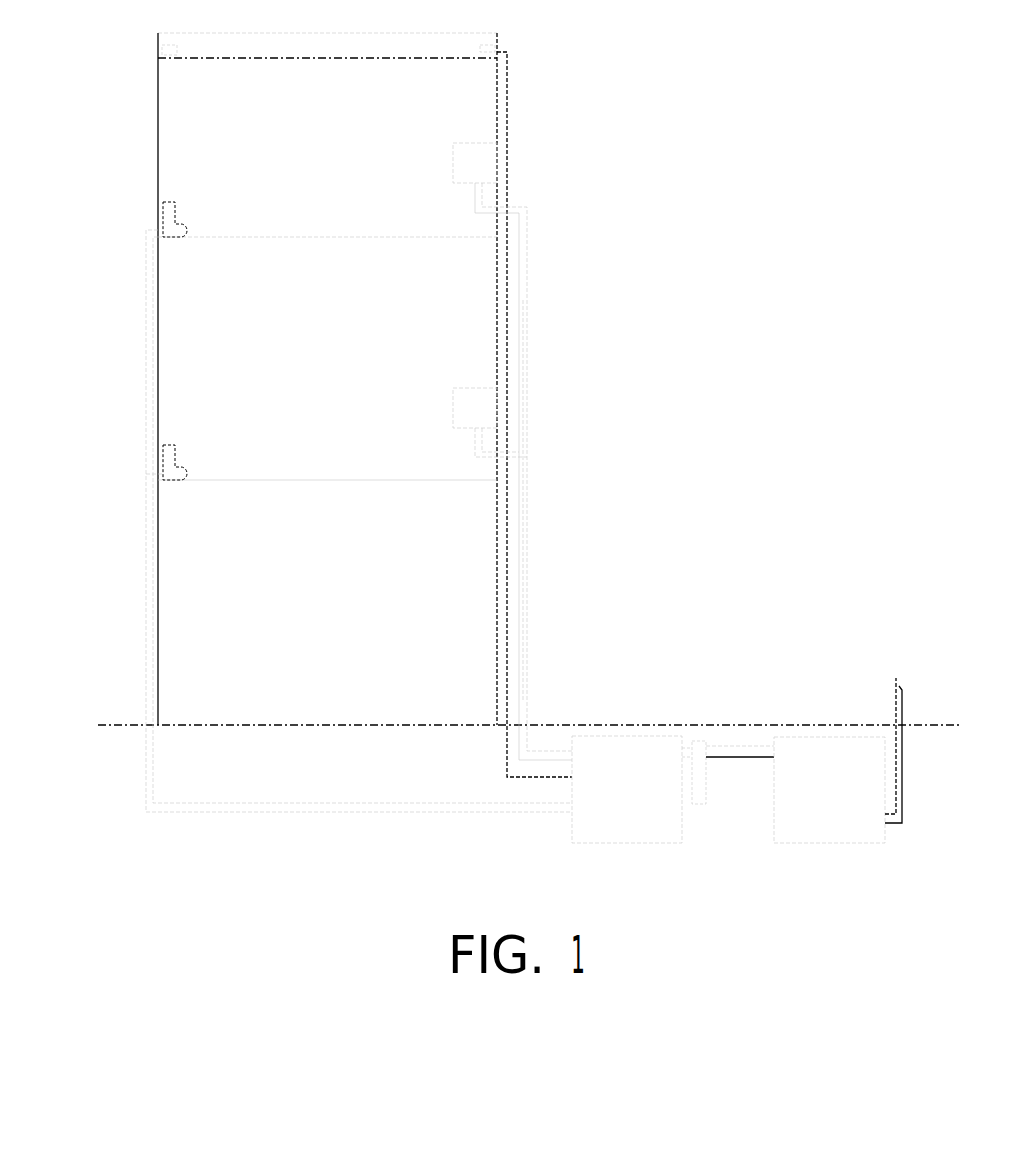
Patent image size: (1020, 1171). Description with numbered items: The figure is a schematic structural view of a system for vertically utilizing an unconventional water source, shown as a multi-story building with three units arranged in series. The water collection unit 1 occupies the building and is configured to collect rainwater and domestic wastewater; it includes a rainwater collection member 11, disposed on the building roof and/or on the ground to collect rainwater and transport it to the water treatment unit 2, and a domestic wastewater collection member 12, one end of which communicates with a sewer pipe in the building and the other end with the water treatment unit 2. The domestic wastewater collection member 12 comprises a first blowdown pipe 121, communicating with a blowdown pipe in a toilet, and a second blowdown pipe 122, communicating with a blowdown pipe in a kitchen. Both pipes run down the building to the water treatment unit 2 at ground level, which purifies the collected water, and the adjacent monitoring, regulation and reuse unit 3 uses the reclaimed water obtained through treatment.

The water collection unit 1 is at (675, 86).
The rainwater collection member 11 is at (371, 405).
The domestic wastewater collection member 12 is at (622, 456).
The first blowdown pipe 121 is at (307, 506).
The second blowdown pipe 122 is at (566, 500).
The water treatment unit 2 is at (673, 734).
The monitoring, regulation and reuse unit 3 is at (838, 752).